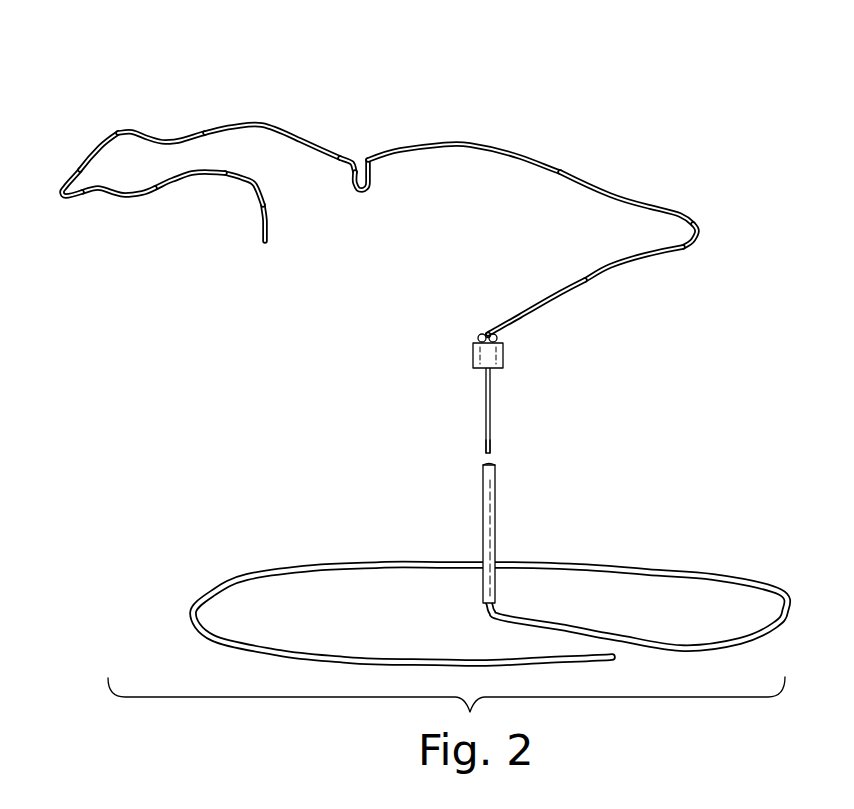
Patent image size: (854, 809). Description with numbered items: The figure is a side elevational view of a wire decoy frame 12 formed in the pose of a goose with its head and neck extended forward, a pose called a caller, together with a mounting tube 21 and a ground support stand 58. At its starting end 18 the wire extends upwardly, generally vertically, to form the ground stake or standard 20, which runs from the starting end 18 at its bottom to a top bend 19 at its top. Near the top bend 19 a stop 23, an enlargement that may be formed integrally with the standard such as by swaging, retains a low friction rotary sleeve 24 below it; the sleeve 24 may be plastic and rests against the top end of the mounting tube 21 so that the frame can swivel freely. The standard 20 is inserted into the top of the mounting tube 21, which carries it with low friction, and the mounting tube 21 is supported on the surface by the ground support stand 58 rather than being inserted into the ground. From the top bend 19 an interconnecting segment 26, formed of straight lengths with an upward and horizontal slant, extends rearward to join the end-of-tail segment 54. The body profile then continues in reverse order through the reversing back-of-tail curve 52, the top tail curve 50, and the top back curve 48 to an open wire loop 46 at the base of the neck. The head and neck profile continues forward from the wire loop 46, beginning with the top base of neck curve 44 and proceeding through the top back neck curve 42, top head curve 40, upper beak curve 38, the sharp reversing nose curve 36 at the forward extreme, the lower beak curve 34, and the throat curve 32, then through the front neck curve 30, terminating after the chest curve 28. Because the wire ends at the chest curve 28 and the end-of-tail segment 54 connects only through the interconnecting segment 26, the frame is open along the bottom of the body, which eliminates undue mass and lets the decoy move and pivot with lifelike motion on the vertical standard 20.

The decoy frame 12 is at (606, 84).
The starting end 18 is at (491, 453).
The top bend 19 is at (484, 333).
The standard 20 is at (492, 392).
The mounting tube 21 is at (497, 509).
The stop 23 is at (500, 338).
The rotary sleeve 24 is at (473, 356).
The interconnecting segment 26 is at (550, 300).
The chest curve 28 is at (268, 238).
The front neck curve 30 is at (243, 181).
The throat curve 32 is at (168, 188).
The lower beak curve 34 is at (91, 194).
The nose curve 36 is at (64, 198).
The upper beak curve 38 is at (68, 186).
The top head curve 40 is at (117, 131).
The top back neck curve 42 is at (260, 124).
The top base of neck curve 44 is at (335, 155).
The open wire loop 46 is at (368, 183).
The top back curve 48 is at (478, 145).
The top tail curve 50 is at (668, 208).
The back-of-tail curve 52 is at (698, 240).
The end-of-tail segment 54 is at (658, 252).
The ground support stand 58 is at (432, 565).